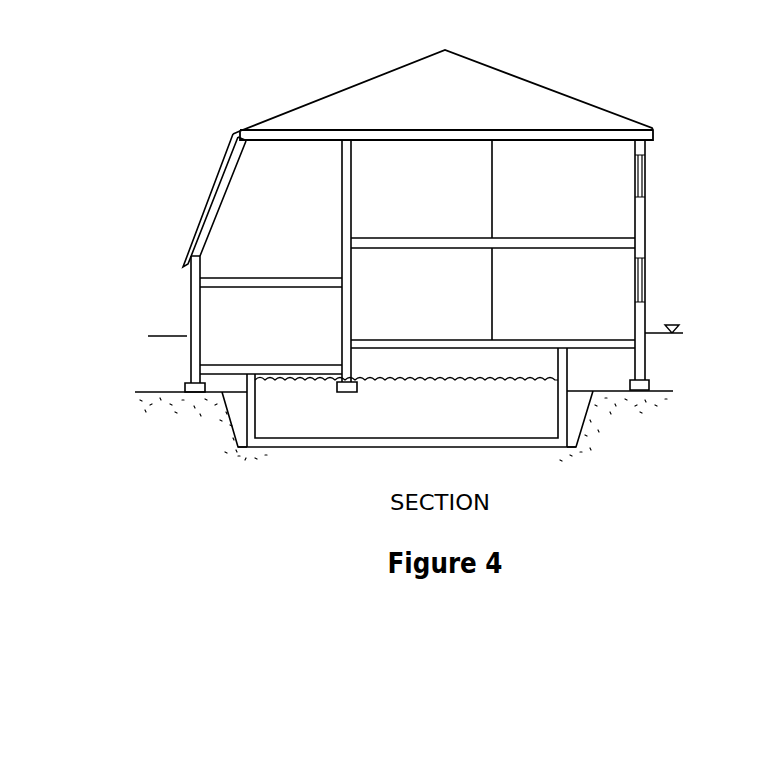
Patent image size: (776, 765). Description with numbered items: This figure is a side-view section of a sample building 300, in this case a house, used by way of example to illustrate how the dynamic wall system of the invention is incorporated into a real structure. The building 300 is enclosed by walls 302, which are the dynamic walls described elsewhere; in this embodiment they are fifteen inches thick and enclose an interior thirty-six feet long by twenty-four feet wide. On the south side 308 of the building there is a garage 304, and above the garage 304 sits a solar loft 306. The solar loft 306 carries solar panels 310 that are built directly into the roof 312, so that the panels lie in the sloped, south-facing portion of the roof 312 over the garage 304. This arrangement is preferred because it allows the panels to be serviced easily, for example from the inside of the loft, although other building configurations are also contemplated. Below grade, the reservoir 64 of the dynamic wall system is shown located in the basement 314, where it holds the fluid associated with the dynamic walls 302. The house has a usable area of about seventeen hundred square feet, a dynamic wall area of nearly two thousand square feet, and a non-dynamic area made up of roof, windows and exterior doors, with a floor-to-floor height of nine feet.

The building 300 is at (412, 273).
The walls 302 is at (191, 303).
The garage 304 is at (271, 341).
The solar loft 306 is at (271, 248).
The south side 308 is at (161, 199).
The solar panels 310 is at (213, 182).
The roof 312 is at (315, 102).
The basement 314 is at (587, 420).
The reservoir 64 is at (348, 449).